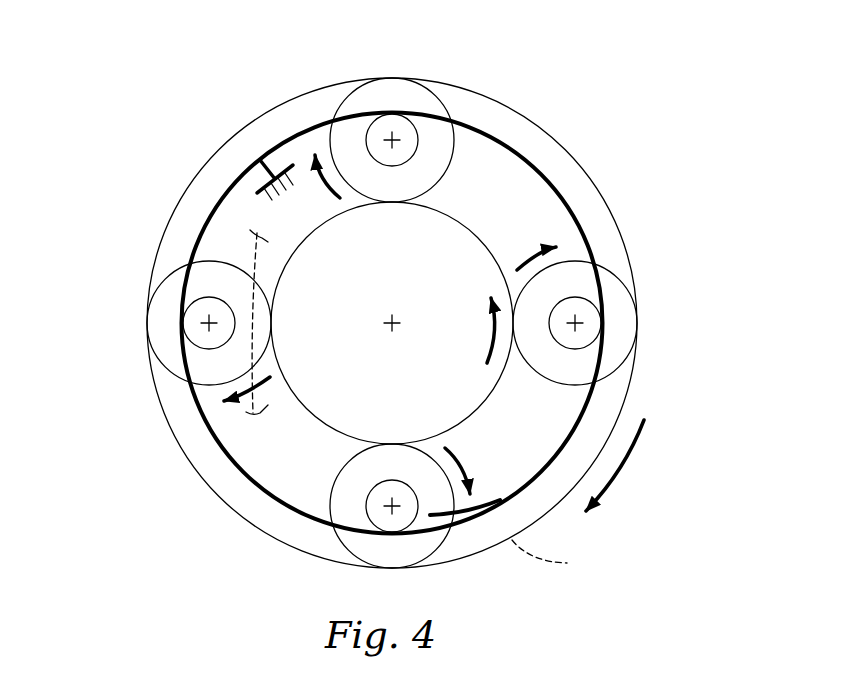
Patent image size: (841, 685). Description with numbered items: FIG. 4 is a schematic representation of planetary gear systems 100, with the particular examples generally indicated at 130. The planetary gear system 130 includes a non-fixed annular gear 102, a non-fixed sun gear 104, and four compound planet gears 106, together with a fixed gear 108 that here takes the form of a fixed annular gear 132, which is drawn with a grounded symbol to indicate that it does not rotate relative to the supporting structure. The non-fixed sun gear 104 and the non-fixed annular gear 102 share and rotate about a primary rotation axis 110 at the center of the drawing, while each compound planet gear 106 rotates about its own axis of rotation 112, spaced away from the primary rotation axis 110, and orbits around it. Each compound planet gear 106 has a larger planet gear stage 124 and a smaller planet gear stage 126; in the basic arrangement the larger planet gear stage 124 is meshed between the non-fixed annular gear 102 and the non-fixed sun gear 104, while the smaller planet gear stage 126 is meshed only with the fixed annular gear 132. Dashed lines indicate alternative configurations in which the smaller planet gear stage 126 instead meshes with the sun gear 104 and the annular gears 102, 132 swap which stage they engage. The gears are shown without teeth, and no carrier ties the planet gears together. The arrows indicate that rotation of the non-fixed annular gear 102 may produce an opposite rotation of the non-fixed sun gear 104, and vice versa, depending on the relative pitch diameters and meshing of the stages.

The planetary gear system 100 is at (138, 38).
The planetary gear system 130 is at (161, 84).
The non-fixed annular gear 102 is at (590, 233).
The non-fixed sun gear 104 is at (212, 432).
The compound planet gear 106 is at (452, 108).
The fixed gear 108 is at (465, 531).
The primary rotation axis 110 is at (400, 320).
The axis of rotation 112 is at (400, 137).
The larger planet gear stage 124 is at (333, 143).
The smaller planet gear stage 126 is at (365, 138).
The fixed annular gear 132 is at (528, 487).